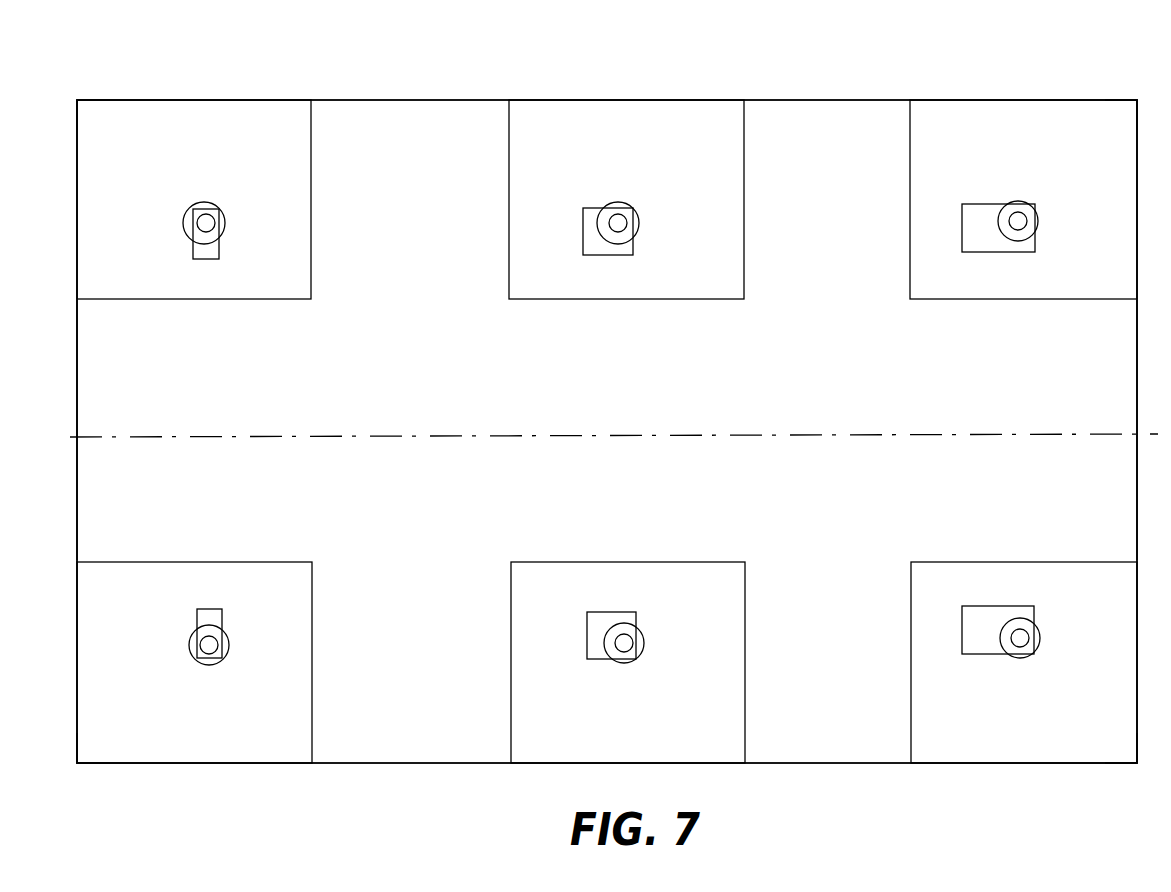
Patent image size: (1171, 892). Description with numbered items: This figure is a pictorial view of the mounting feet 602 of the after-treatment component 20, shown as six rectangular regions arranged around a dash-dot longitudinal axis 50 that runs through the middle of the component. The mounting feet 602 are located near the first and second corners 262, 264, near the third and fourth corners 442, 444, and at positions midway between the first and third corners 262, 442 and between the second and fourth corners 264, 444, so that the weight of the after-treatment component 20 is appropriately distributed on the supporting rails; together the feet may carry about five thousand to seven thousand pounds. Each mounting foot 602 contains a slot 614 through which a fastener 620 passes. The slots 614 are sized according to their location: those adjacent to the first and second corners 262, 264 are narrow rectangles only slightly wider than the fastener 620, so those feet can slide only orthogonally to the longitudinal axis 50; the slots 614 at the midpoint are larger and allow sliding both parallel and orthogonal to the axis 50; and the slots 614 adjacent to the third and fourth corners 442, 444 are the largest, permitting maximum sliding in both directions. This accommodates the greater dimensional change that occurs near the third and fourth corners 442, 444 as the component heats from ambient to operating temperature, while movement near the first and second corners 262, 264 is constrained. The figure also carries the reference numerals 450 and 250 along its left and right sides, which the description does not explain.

The after-treatment component 20 is at (803, 100).
The longitudinal axis 50 is at (707, 434).
The second side edge 250 is at (1137, 422).
The first corner 262 is at (82, 100).
The second corner 264 is at (78, 764).
The third corner 442 is at (1137, 100).
The fourth corner 444 is at (1137, 764).
The first side edge 450 is at (77, 418).
The mounting feet 602 is at (1053, 740).
The slot 614 is at (587, 409).
The fastener 620 is at (623, 432).